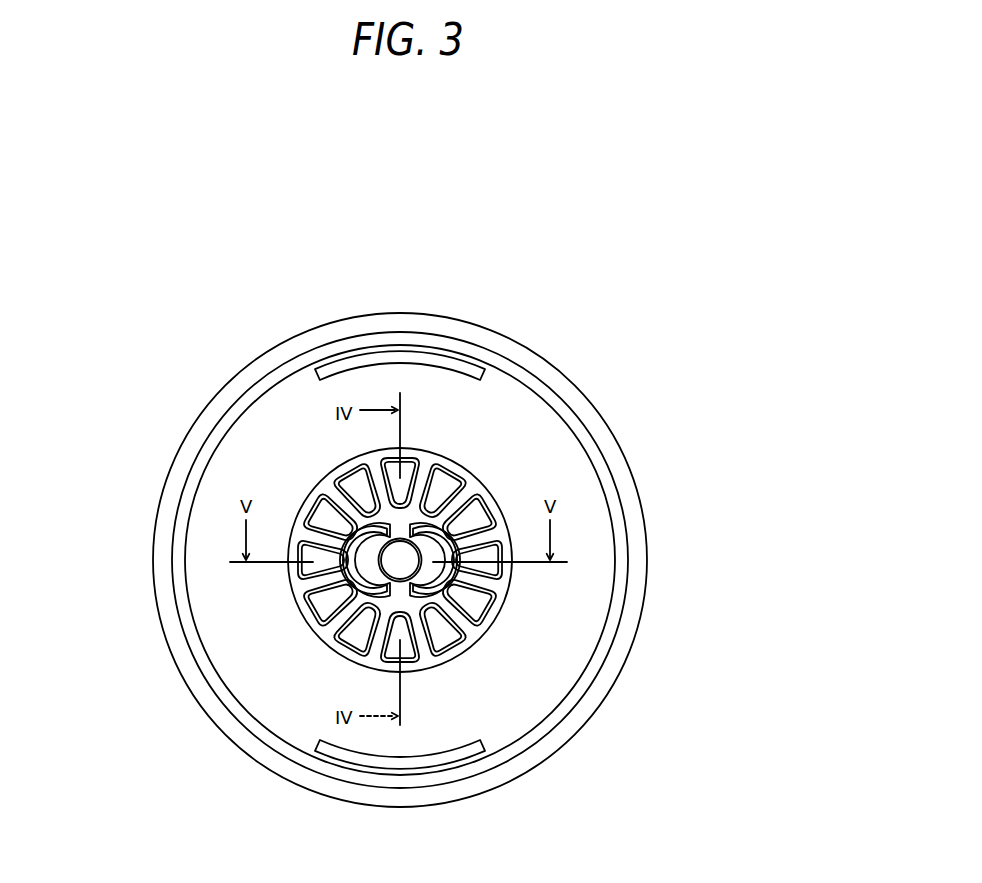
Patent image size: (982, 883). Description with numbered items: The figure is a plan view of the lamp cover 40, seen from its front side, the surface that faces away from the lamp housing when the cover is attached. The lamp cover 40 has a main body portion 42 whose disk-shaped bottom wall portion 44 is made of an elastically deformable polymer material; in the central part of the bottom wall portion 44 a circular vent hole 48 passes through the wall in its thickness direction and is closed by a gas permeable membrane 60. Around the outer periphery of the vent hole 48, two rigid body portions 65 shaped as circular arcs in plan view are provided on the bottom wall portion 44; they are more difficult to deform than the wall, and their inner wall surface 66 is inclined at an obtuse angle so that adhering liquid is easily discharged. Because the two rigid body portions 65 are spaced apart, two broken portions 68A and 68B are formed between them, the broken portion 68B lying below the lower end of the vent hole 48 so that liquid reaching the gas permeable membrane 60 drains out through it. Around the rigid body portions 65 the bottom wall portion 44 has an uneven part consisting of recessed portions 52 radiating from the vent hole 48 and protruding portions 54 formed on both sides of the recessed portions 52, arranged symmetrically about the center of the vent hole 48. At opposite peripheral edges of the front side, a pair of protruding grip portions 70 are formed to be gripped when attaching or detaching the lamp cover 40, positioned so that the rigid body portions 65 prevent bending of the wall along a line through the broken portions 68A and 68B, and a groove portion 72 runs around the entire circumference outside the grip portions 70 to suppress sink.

The lamp cover 40 is at (407, 514).
The main body portion 42 is at (620, 446).
The bottom wall portion 44 is at (220, 482).
The vent hole 48 is at (390, 528).
The recessed portions 52 is at (324, 614).
The protruding portions 54 is at (480, 518).
The gas permeable membrane 60 is at (405, 556).
The rigid body portions 65 is at (355, 571).
The inner wall surface 66 is at (444, 573).
The broken portion 68A is at (402, 526).
The broken portion 68B is at (402, 594).
The protruding portions (grip portions) 70 is at (373, 360).
The groove portion 72 is at (235, 410).